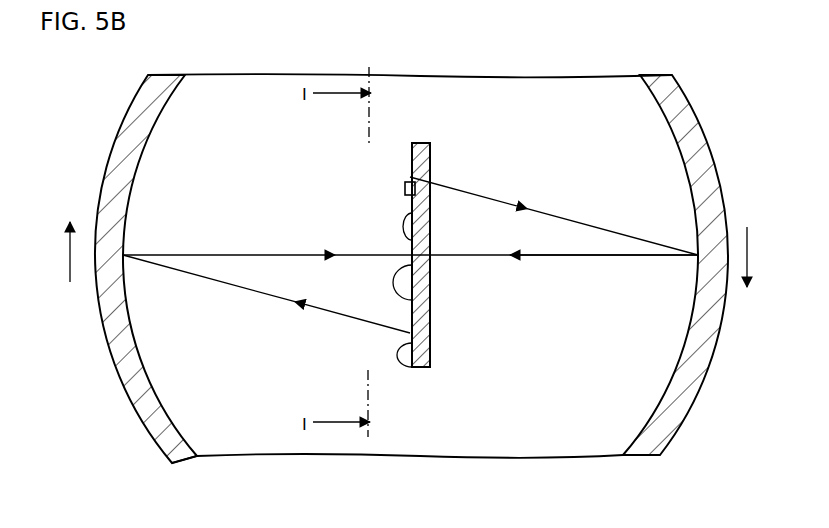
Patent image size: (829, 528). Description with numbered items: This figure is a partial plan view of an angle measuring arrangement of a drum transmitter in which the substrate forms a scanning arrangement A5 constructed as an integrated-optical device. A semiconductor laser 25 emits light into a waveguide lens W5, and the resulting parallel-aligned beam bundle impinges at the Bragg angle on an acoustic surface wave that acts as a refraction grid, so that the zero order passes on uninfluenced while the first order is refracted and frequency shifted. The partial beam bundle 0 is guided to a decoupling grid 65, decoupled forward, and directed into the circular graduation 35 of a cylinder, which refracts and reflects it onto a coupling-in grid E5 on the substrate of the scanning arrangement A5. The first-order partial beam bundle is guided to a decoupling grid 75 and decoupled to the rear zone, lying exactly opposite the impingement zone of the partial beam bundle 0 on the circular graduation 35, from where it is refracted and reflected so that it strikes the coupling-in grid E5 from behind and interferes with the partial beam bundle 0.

The circular graduation 35 is at (742, 167).
The semiconductor laser 25 is at (405, 181).
The decoupling grid 75 is at (410, 178).
The scanning arrangement A5 is at (430, 153).
The waveguide lens W5 is at (404, 226).
The coupling-in grid E5 is at (405, 299).
The decoupling grid 65 is at (404, 340).
The partial beam bundle of the zero order 0 is at (285, 300).